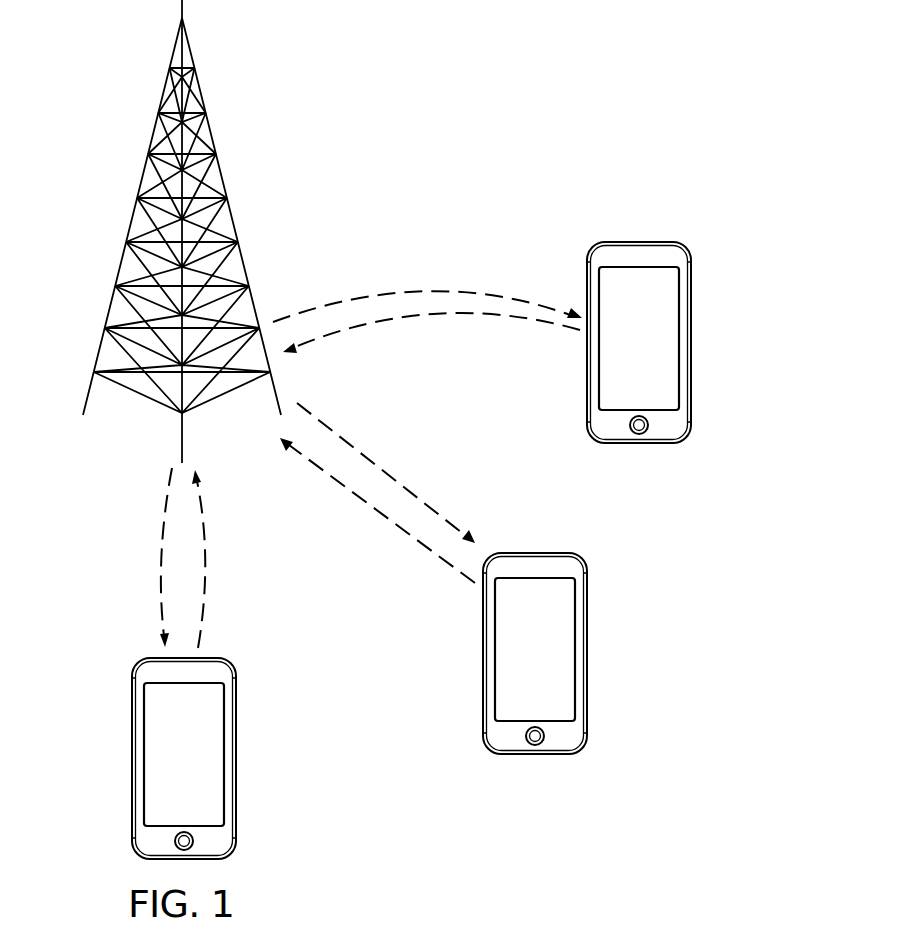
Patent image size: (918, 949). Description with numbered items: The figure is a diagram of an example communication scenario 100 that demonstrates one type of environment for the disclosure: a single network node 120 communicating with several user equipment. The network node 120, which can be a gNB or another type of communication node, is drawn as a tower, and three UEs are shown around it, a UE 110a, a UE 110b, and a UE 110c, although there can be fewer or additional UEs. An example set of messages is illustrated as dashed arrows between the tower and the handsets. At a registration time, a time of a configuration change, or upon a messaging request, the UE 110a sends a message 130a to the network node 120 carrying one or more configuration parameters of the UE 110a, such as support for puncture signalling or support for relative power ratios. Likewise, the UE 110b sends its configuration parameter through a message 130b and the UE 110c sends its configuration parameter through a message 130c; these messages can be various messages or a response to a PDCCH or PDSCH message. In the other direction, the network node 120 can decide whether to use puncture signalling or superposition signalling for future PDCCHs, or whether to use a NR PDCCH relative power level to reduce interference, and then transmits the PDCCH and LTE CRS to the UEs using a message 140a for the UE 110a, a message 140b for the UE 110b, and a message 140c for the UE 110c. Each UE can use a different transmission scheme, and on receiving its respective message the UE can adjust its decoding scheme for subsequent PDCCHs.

The communication scenario 100 is at (519, 93).
The network node 120 is at (131, 221).
The UE 110a is at (132, 758).
The UE 110b is at (587, 655).
The UE 110c is at (688, 340).
The message 130a is at (205, 588).
The message 130b is at (352, 508).
The message 130c is at (433, 318).
The message 140a is at (160, 560).
The message 140b is at (395, 468).
The message 140c is at (455, 293).